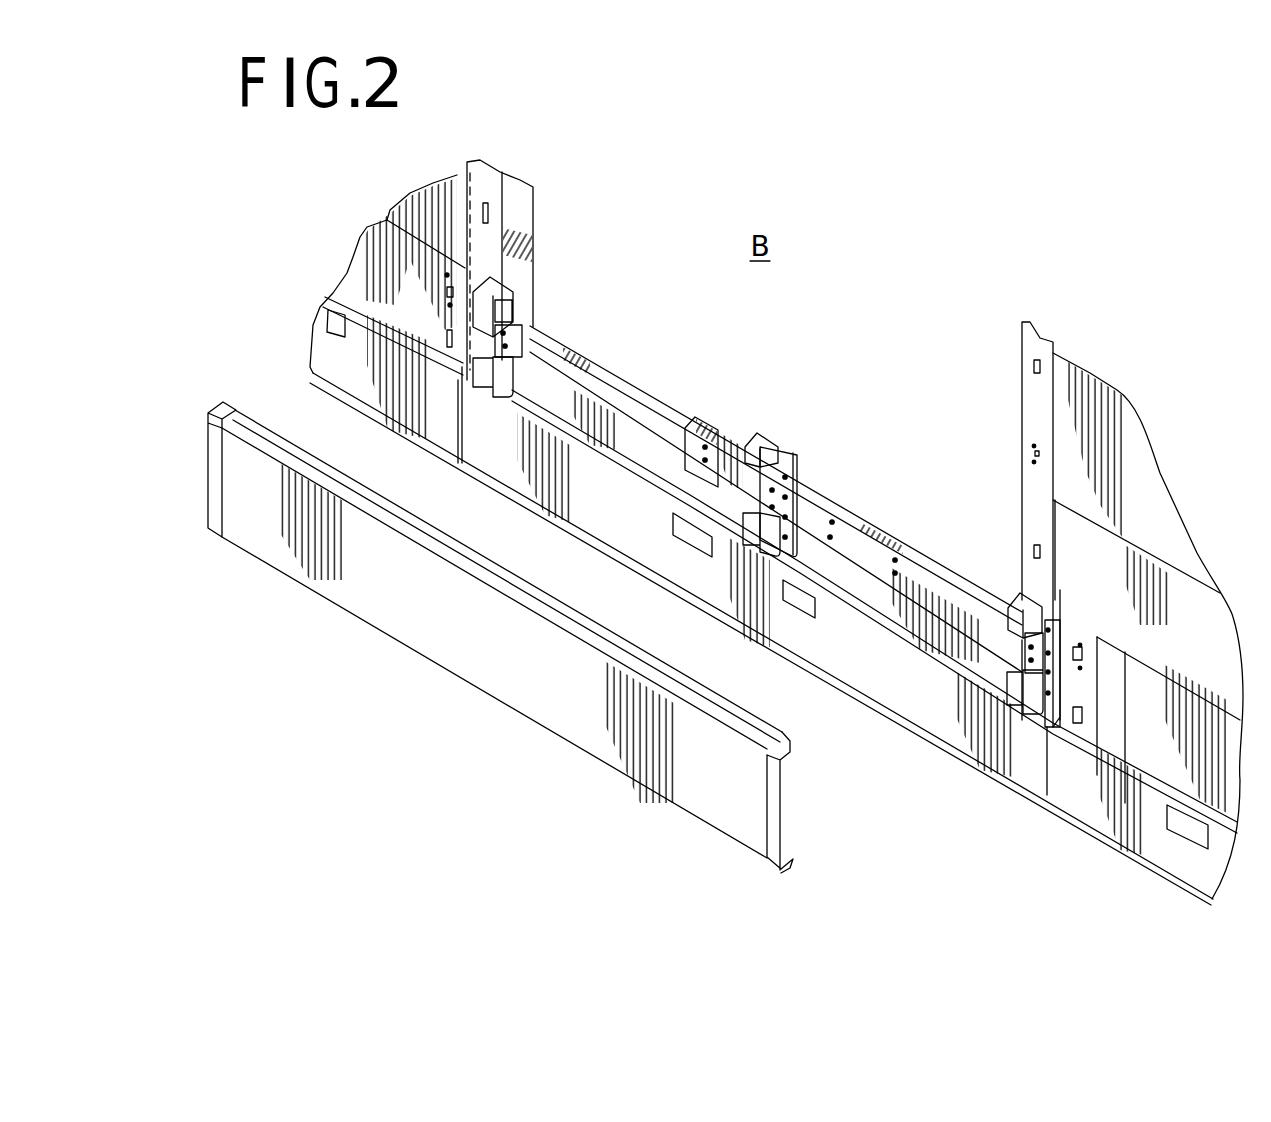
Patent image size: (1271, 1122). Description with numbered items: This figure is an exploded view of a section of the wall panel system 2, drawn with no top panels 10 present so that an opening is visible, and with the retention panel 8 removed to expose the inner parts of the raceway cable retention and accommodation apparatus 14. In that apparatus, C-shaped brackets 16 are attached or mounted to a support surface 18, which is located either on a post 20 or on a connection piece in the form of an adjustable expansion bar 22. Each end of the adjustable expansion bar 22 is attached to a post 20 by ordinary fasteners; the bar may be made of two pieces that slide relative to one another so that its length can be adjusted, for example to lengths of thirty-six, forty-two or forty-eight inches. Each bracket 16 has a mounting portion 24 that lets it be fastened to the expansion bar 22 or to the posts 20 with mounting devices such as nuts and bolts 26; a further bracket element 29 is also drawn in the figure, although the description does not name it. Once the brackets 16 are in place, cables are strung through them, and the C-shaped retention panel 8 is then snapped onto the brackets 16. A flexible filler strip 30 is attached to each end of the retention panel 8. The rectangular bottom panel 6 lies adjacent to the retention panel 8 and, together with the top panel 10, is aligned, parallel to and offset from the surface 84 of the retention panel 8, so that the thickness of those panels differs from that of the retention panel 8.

The wall panel system 2 is at (1091, 276).
The bottom panel 6 is at (920, 703).
The retention panel 8 is at (568, 715).
The top panel 10 is at (1138, 470).
The raceway cable retention and accommodation apparatus 14 is at (900, 517).
The C-shaped bracket 16 is at (505, 300).
The support surface 18 is at (495, 290).
The post 20 is at (520, 192).
The adjustable expansion bar 22 is at (705, 420).
The mounting portion 24 is at (485, 340).
The nuts and bolts 26 is at (1064, 610).
The bracket 29 is at (790, 470).
The flexible filler strip 30 is at (212, 478).
The surface 84 is at (428, 628).